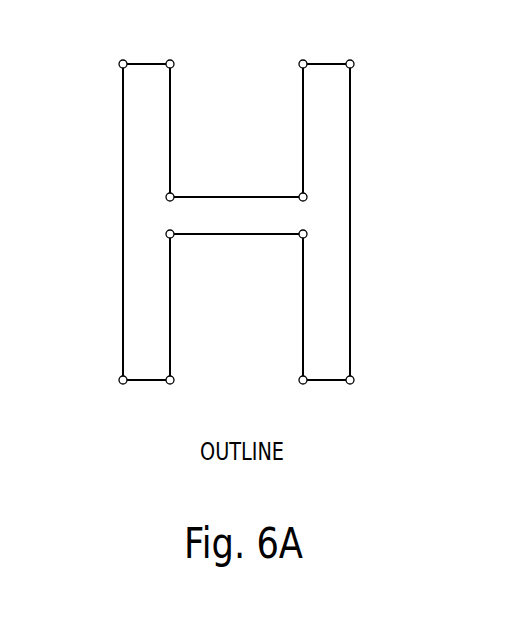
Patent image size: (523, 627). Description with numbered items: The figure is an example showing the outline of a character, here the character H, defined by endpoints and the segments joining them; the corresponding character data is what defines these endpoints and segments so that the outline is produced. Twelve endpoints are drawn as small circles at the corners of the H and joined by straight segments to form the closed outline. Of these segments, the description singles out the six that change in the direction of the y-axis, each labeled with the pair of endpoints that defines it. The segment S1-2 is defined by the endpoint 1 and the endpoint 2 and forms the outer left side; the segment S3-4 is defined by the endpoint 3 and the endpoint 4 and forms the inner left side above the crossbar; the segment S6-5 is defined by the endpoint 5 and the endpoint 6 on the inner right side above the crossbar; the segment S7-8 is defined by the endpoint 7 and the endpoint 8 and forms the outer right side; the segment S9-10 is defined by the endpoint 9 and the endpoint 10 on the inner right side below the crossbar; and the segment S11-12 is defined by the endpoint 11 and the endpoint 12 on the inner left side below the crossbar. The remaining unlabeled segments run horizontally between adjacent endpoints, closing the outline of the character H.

The endpoint 1 is at (116, 378).
The endpoint 2 is at (115, 62).
The endpoint 3 is at (179, 62).
The endpoint 4 is at (181, 180).
The endpoint 5 is at (297, 180).
The endpoint 6 is at (294, 62).
The endpoint 7 is at (359, 62).
The endpoint 8 is at (360, 378).
The endpoint 9 is at (293, 378).
The endpoint 10 is at (292, 248).
The endpoint 11 is at (183, 249).
The endpoint 12 is at (185, 378).
The segment S1-2 is at (122, 140).
The segment S3-4 is at (171, 112).
The segment S6-5 is at (302, 142).
The segment S7-8 is at (351, 214).
The segment S9-10 is at (302, 351).
The segment S11-12 is at (171, 290).